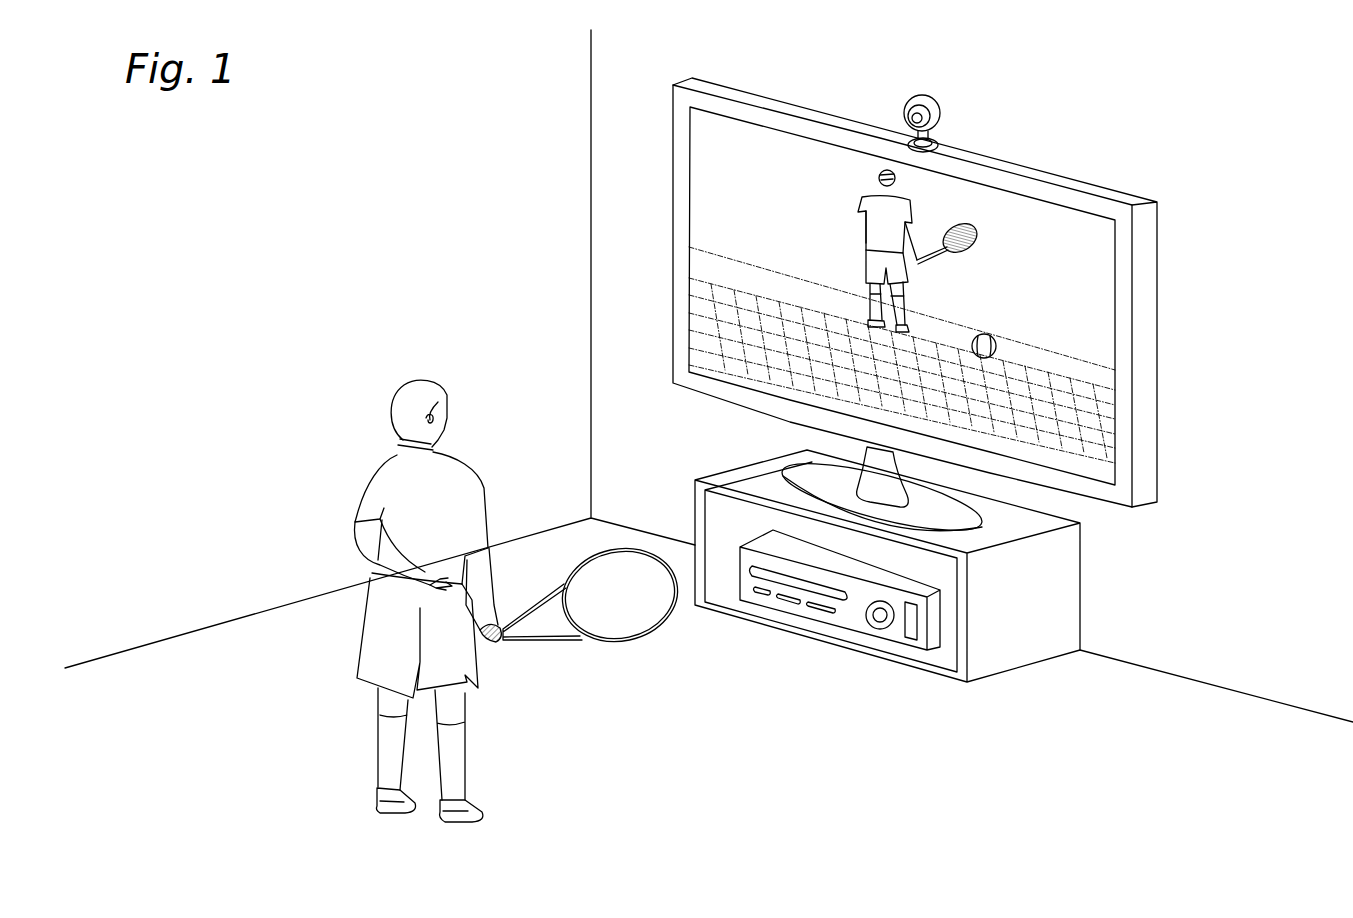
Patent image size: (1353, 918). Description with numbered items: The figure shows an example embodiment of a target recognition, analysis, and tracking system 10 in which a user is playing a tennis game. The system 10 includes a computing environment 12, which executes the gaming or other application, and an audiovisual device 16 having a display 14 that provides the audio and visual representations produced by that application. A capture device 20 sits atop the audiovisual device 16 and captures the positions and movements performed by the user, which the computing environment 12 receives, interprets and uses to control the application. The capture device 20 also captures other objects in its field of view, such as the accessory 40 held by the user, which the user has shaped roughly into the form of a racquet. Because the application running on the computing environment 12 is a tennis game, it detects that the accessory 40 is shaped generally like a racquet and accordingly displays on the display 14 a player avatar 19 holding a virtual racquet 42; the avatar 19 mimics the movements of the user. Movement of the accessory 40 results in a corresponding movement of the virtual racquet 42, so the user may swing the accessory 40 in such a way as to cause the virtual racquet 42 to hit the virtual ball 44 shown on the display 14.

The target recognition, analysis, and tracking system 10 is at (1015, 58).
The computing environment 12 is at (850, 625).
The display 14 is at (940, 296).
The audiovisual device 16 is at (936, 292).
The avatar 19 is at (870, 192).
The capture device 20 is at (945, 110).
The accessory 40 is at (637, 642).
The virtual racquet 42 is at (973, 225).
The virtual ball 44 is at (997, 348).